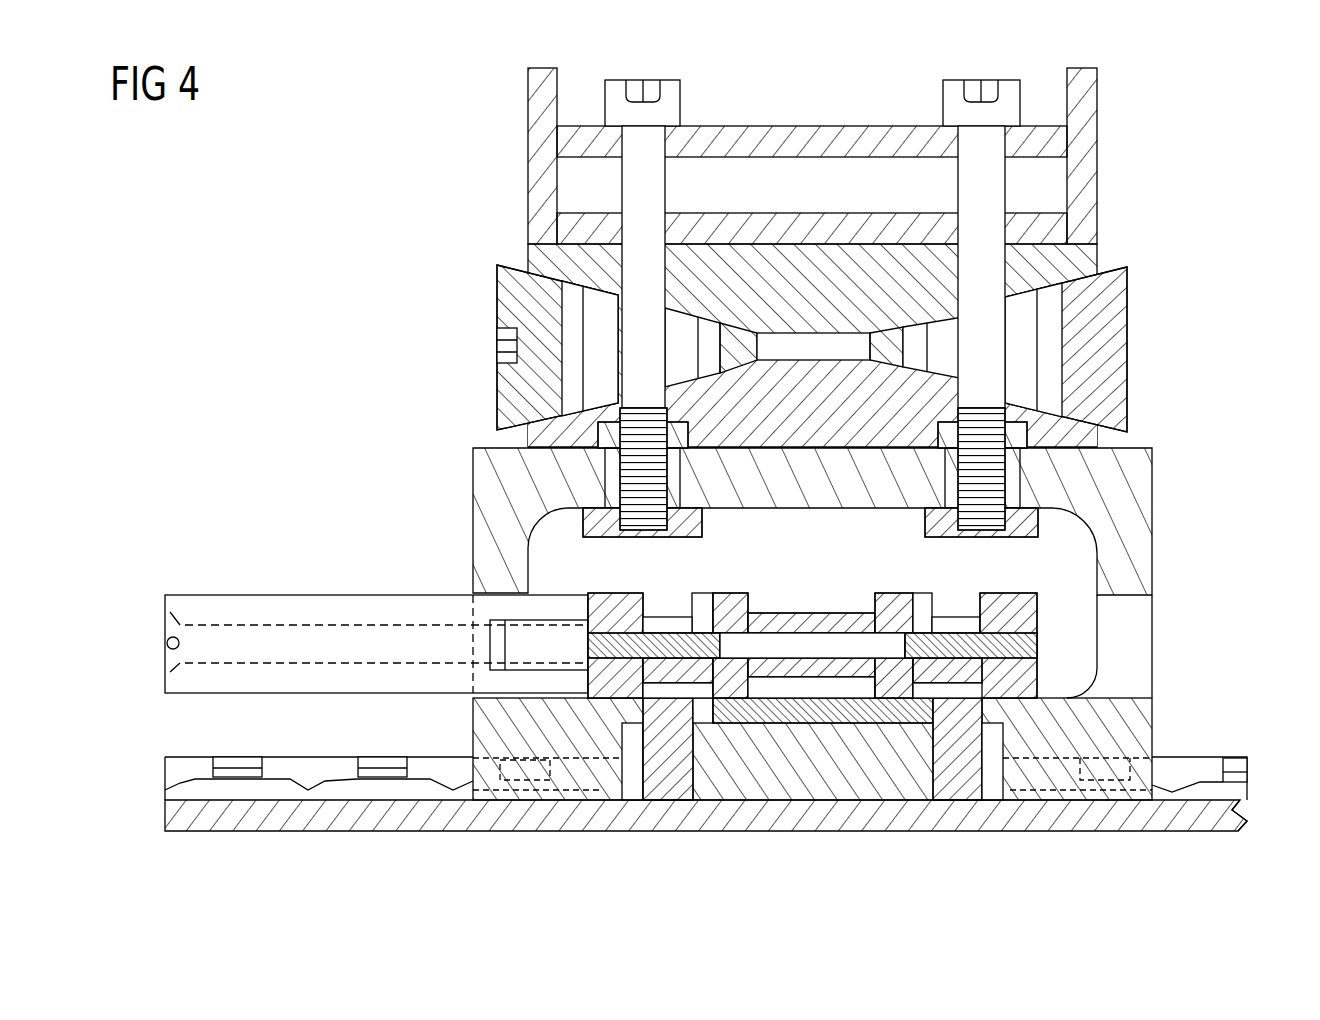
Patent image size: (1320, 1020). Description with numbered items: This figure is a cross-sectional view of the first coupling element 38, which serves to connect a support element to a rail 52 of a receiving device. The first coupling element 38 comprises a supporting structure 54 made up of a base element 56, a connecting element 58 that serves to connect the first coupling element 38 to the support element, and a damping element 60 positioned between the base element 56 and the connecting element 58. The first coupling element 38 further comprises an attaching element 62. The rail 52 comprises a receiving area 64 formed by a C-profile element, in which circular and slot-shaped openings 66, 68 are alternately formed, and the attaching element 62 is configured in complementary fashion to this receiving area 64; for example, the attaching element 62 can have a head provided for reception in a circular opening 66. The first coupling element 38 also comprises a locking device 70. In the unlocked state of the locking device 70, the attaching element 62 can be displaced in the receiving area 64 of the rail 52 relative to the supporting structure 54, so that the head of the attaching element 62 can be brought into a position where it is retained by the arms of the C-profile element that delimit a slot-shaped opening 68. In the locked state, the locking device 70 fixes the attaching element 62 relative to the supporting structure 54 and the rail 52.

The first coupling element 38 is at (1172, 284).
The rail 52 is at (1235, 815).
The supporting structure 54 is at (1185, 474).
The base element 56 is at (1140, 547).
The connecting element 58 is at (1092, 146).
The damping element 60 is at (1117, 352).
The attaching element 62 is at (820, 832).
The receiving area 64 is at (340, 745).
The circular opening 66 is at (165, 762).
The slot-shaped opening 68 is at (238, 762).
The locking device 70 is at (327, 610).